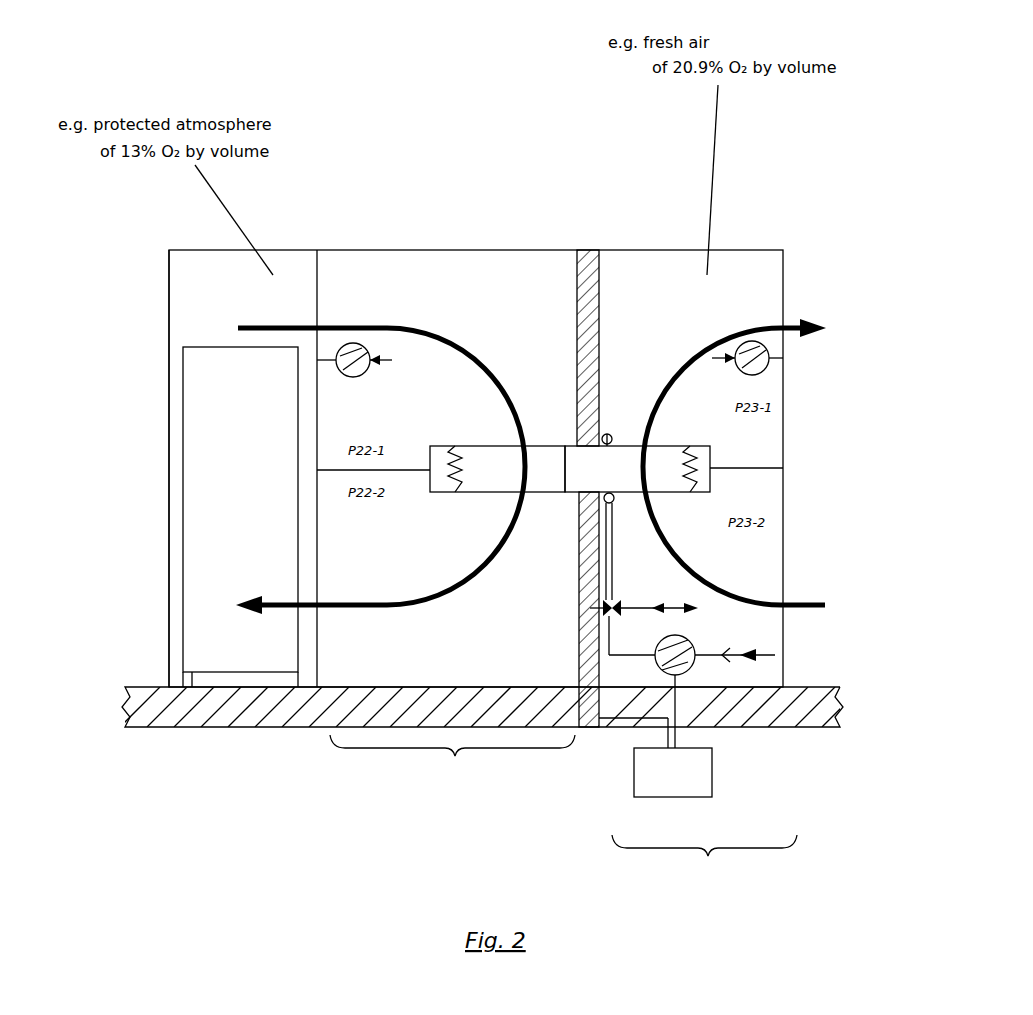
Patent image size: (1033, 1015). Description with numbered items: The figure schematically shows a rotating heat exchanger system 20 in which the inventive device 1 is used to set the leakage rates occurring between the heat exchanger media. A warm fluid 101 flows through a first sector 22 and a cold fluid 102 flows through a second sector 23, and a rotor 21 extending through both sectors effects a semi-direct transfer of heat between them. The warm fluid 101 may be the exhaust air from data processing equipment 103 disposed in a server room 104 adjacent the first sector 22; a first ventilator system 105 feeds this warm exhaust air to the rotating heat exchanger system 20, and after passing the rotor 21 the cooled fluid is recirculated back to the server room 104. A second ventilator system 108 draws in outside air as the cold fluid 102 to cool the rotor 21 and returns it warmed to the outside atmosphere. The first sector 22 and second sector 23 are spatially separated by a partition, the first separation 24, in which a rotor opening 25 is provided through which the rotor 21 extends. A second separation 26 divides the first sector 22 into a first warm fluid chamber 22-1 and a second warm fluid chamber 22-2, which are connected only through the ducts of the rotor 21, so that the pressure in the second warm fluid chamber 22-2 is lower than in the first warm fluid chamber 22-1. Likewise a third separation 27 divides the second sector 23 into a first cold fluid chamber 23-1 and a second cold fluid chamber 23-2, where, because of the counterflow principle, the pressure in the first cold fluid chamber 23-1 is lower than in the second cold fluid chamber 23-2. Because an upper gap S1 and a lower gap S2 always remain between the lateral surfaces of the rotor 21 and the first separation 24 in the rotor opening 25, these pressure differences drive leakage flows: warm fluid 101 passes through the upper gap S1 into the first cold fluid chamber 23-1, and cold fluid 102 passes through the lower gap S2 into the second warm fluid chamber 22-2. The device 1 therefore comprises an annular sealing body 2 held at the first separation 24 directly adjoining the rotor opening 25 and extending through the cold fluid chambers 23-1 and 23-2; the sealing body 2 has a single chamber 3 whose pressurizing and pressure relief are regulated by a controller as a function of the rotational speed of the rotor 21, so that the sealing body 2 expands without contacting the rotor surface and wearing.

The rotating heat exchanger system 20 is at (476, 376).
The warm fluid 101 is at (403, 328).
The cold fluid 102 is at (683, 350).
The data processing equipment 103 is at (218, 434).
The server room 104 is at (220, 316).
The first ventilator system 105 is at (359, 344).
The second pump / fan 108 is at (768, 342).
The first separation 24 is at (589, 270).
The device 1 is at (618, 410).
The annular sealing body 2 is at (617, 508).
The chamber 3 is at (607, 430).
The upper gap S1 is at (576, 438).
The lower gap S2 is at (576, 506).
The rotor opening 25 is at (565, 468).
The second separation 26 is at (427, 465).
The rotor 21 is at (449, 456).
The third separation 27 is at (742, 462).
The first sector 22 is at (452, 757).
The second sector 23 is at (704, 858).
The first warm fluid chamber 22-1 is at (381, 366).
The second warm fluid chamber 22-2 is at (380, 571).
The first cold fluid chamber 23-1 is at (734, 366).
The second cold fluid chamber 23-2 is at (734, 535).